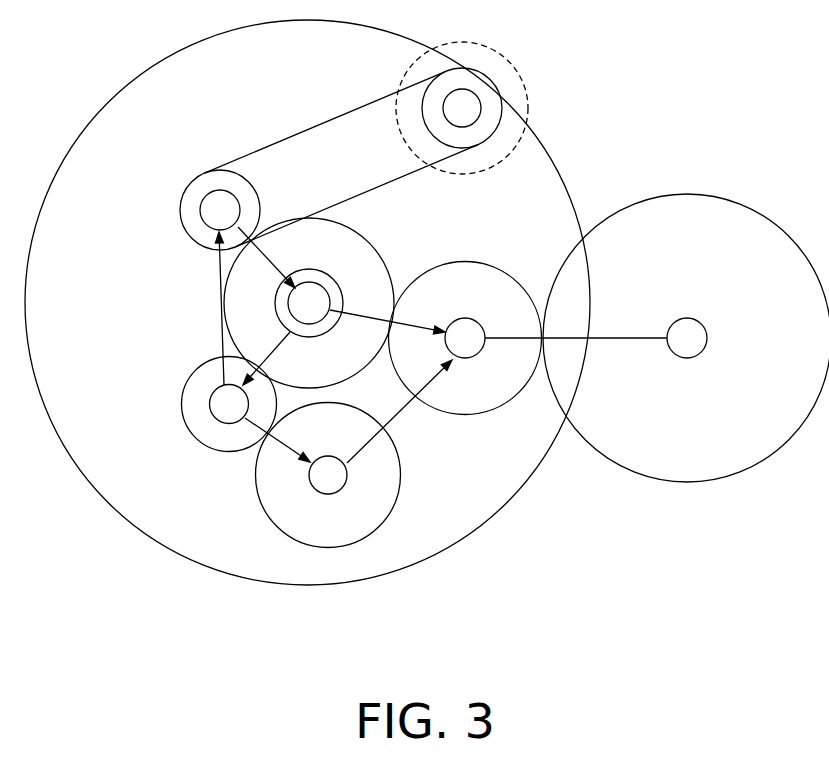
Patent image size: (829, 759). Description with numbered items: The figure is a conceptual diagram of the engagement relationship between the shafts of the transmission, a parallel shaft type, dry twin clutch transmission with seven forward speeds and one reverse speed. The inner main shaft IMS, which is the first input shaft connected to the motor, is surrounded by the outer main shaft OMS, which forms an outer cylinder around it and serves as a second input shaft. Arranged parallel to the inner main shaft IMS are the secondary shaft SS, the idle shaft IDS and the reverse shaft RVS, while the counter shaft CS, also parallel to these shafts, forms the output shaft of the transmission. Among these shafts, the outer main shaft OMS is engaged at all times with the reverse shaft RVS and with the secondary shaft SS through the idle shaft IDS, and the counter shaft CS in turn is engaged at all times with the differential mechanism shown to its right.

The reverse shaft RVS is at (217, 190).
The outer main shaft OMS is at (337, 283).
The inner main shaft IMS is at (320, 320).
The idle shaft IDS is at (210, 395).
The secondary shaft SS is at (329, 456).
The counter shaft CS is at (478, 358).